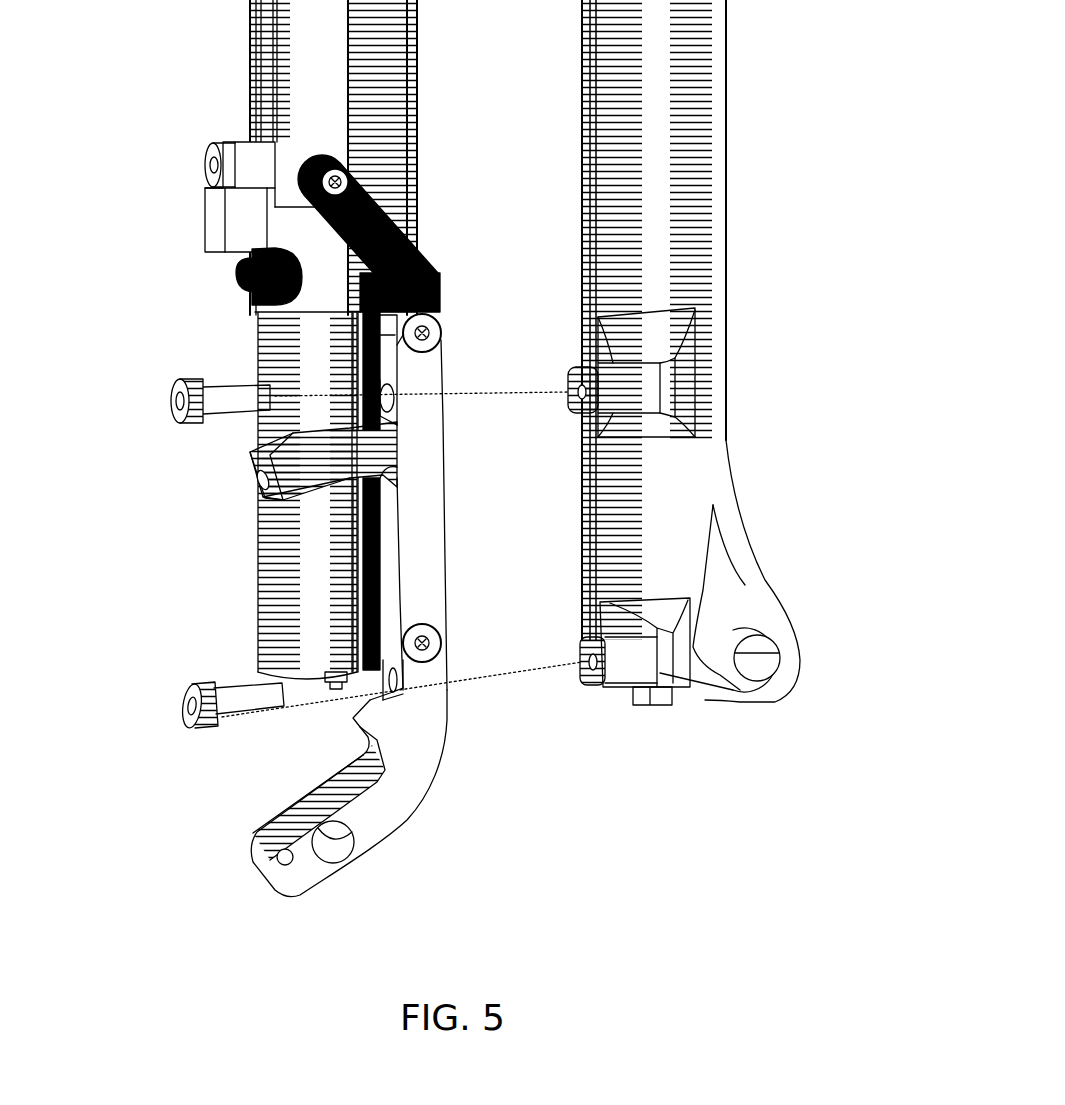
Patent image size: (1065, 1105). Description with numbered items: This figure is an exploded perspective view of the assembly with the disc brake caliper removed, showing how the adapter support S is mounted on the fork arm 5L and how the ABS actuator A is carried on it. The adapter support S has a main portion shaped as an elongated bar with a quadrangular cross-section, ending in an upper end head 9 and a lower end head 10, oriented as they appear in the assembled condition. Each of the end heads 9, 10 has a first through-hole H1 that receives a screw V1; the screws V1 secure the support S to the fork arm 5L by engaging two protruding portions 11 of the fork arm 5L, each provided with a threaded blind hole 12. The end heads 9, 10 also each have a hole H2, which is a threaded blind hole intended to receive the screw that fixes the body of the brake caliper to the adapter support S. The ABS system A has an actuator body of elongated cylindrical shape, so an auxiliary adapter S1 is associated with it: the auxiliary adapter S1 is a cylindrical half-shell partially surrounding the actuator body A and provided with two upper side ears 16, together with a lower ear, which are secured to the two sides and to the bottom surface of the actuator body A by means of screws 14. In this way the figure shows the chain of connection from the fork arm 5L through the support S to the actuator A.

The ABS system actuator A is at (318, 72).
The fork arm 5L is at (700, 333).
The upper end head 9 is at (262, 443).
The lower end head 10 is at (372, 803).
The protruding portion 11 is at (628, 398).
The threaded blind hole 12 is at (568, 408).
The screw 14 is at (334, 170).
The upper side ear 16 is at (388, 236).
The adapter support S is at (391, 603).
The auxiliary adapter S1 is at (420, 291).
The first through-hole H1 is at (403, 697).
The hole H2 is at (262, 490).
The screw V1 is at (172, 402).